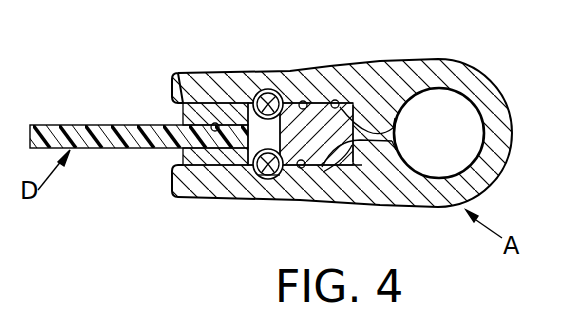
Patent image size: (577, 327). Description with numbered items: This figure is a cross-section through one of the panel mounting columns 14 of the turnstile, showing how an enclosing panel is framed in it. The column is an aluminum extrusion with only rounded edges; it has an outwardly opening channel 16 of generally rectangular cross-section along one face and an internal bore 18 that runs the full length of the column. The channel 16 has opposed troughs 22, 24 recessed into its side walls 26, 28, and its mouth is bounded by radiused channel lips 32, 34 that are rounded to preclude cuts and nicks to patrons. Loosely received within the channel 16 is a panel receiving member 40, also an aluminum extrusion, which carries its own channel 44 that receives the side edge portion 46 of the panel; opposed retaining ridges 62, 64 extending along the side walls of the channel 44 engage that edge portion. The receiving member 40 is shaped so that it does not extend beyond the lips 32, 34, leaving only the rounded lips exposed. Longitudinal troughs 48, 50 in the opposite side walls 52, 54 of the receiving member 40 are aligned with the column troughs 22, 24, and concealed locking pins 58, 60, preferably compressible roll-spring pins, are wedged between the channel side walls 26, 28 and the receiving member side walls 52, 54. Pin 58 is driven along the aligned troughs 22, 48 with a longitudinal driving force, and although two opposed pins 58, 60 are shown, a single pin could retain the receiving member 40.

The panel mounting column 14 is at (415, 68).
The channel 16 is at (356, 110).
The internal bore 18 is at (461, 118).
The trough 22 is at (278, 182).
The trough 24 is at (303, 101).
The side wall 26 is at (302, 169).
The side wall 28 is at (308, 103).
The channel lip 32 is at (176, 170).
The channel lip 34 is at (181, 100).
The panel receiving member 40 is at (337, 157).
The channel 44 is at (222, 150).
The side edge portion 46 is at (195, 135).
The longitudinal trough 48 is at (285, 152).
The longitudinal trough 50 is at (284, 140).
The side wall 52 is at (391, 142).
The side wall 54 is at (390, 130).
The locking pin 58 is at (261, 178).
The locking pin 60 is at (266, 89).
The retaining ridge 62 is at (197, 138).
The retaining ridge 64 is at (216, 123).